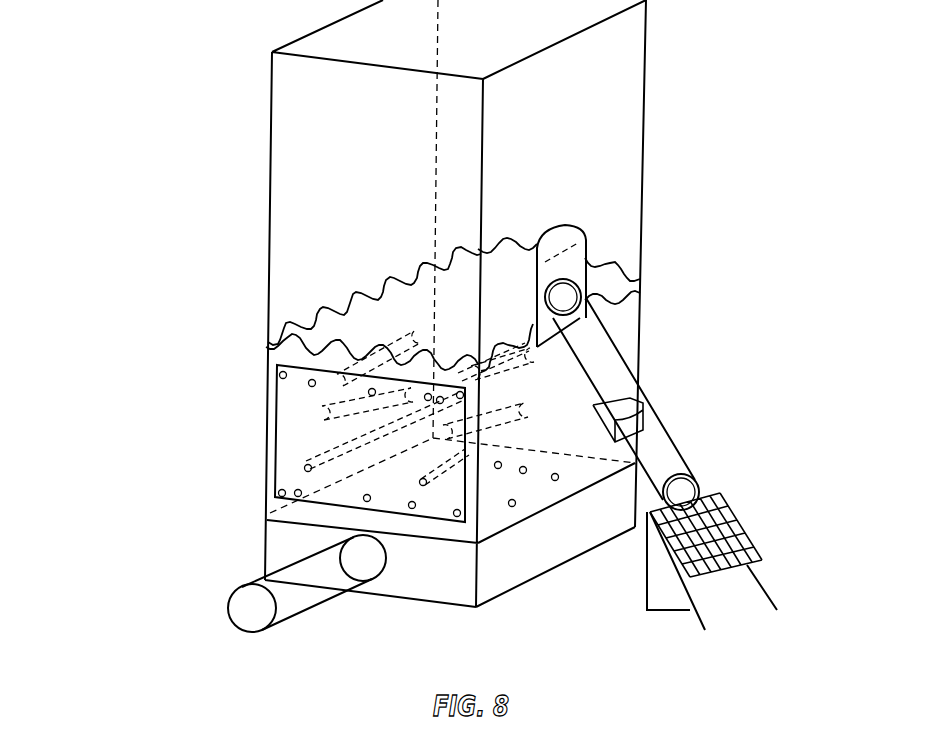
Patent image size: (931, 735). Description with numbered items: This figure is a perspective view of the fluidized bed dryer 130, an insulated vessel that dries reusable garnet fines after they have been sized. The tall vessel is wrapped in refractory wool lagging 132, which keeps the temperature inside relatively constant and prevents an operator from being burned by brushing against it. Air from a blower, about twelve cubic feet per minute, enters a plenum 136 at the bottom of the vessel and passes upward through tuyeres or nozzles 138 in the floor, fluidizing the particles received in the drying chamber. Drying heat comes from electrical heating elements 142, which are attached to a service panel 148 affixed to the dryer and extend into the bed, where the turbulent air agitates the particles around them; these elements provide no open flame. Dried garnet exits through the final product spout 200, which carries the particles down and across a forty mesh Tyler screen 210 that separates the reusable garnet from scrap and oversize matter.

The fluidized bed dryer 130 is at (697, 70).
The refractory wool lagging 132 is at (644, 125).
The plenum 136 is at (363, 562).
The tuyeres or nozzles 138 is at (512, 507).
The electrical heating elements 142 is at (462, 436).
The service panel 148 is at (282, 435).
The final product spout 200 is at (615, 368).
The 40 mesh (Tyler) screen 210 is at (748, 525).